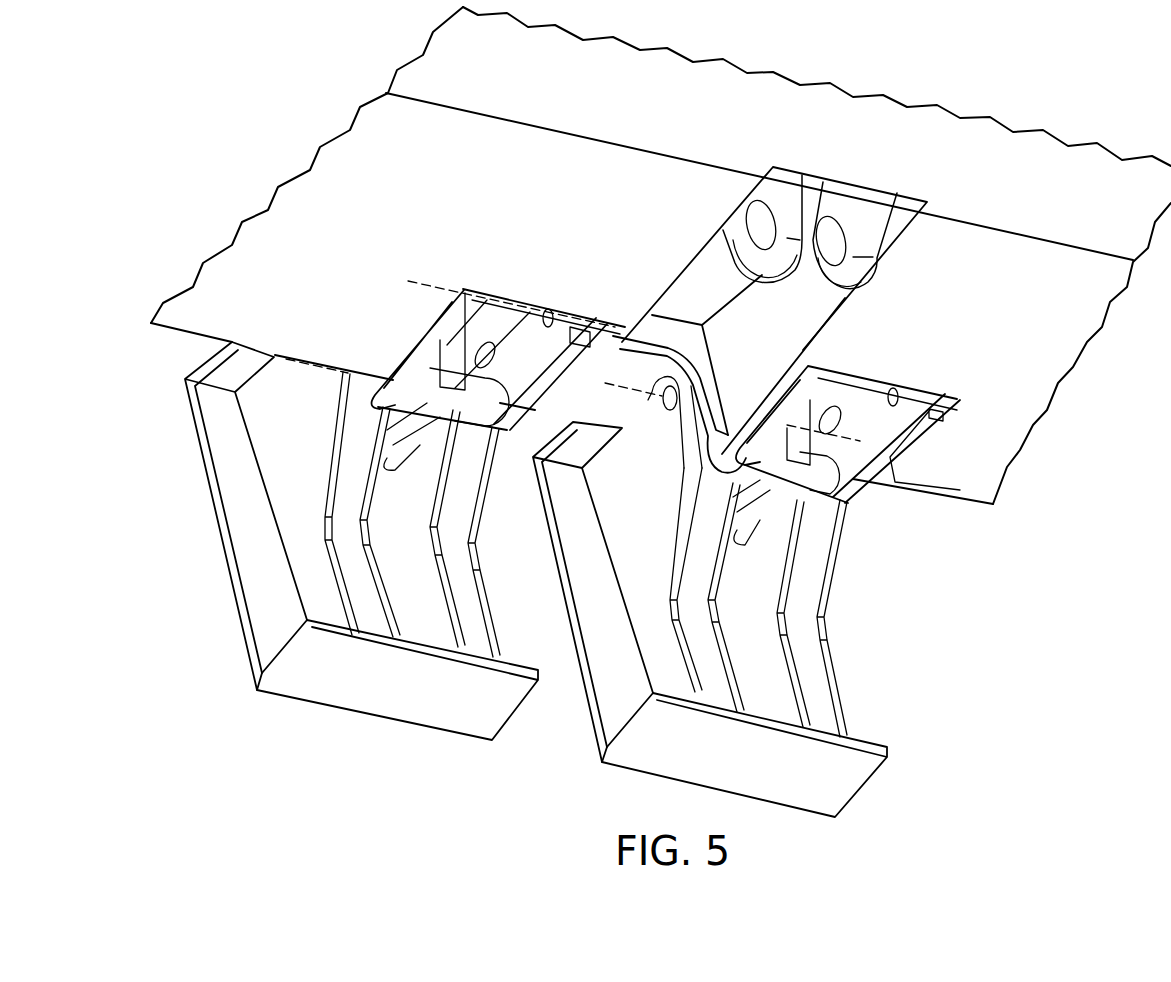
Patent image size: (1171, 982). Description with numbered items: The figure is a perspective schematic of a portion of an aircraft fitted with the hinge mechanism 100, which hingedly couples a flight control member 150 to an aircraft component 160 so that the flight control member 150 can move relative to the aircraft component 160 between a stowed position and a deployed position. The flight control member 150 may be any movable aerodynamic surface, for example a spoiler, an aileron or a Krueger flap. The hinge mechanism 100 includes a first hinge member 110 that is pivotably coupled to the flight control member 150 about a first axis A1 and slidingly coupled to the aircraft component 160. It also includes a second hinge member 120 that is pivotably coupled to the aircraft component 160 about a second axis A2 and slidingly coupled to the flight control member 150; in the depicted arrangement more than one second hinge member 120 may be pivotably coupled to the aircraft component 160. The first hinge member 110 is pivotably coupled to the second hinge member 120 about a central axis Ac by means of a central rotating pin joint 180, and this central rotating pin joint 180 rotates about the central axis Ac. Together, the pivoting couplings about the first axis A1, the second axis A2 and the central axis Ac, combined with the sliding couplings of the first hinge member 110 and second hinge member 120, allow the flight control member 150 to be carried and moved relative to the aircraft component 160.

The hinge mechanism 100 is at (533, 158).
The first hinge member 110 is at (803, 435).
The second hinge member 120 is at (362, 413).
The flight control member 150 is at (672, 150).
The aircraft component 160 is at (258, 437).
The central rotating pin joint 180 is at (450, 415).
The first axis A1 is at (429, 285).
The second axis A2 is at (659, 397).
The central axis Ac is at (313, 368).